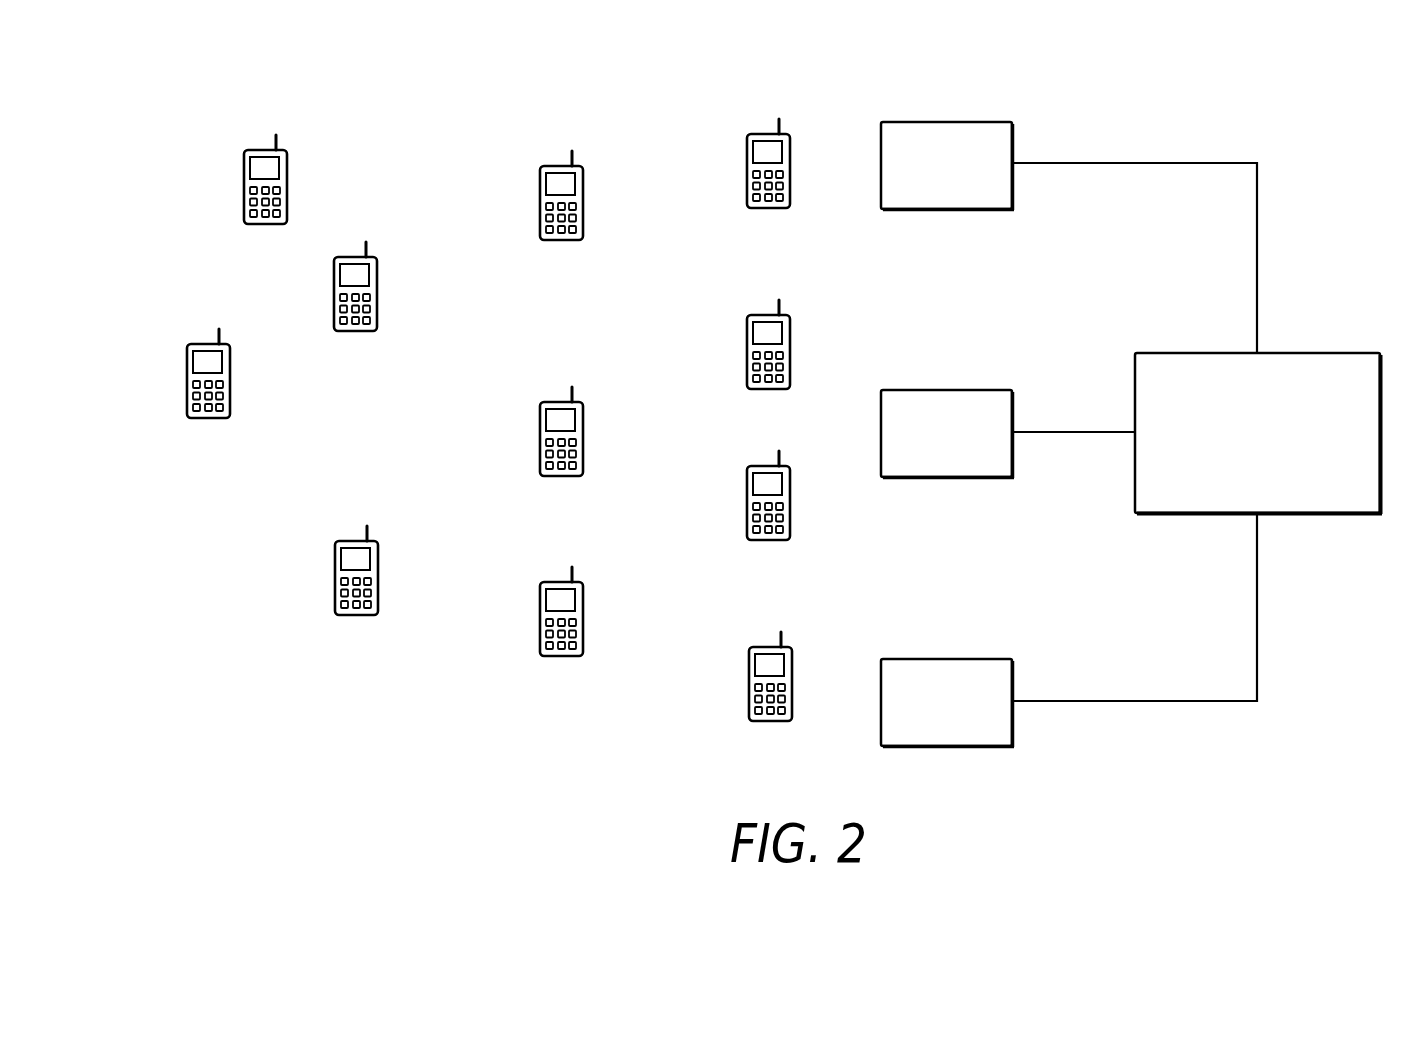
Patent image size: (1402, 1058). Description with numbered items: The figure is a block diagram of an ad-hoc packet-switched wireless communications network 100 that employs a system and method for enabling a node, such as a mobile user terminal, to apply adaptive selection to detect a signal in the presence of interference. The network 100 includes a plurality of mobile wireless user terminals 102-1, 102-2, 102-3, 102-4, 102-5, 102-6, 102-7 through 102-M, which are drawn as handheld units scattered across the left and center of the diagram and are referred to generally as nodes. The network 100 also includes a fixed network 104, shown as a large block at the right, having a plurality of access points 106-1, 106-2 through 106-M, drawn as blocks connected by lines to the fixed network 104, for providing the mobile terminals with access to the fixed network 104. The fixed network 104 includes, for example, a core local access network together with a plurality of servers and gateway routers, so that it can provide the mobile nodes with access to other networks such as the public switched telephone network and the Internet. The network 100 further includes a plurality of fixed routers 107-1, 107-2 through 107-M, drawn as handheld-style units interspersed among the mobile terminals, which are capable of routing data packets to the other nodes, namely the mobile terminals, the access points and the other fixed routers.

The ad-hoc packet-switched wireless communications network 100 is at (670, 70).
The mobile wireless user terminal 102-1 is at (187, 380).
The mobile wireless user terminal 102-2 is at (334, 291).
The mobile wireless user terminal 102-3 is at (540, 437).
The mobile wireless user terminal 102-4 is at (335, 577).
The mobile wireless user terminal 102-5 is at (747, 350).
The mobile wireless user terminal 102-6 is at (244, 185).
The mobile wireless user terminal 102-7 is at (540, 200).
The mobile wireless user terminal 102-M is at (749, 682).
The fixed router 107-1 is at (747, 170).
The fixed router 107-2 is at (540, 617).
The fixed router 107-M is at (747, 502).
The access point 106-1 is at (893, 122).
The access point 106-2 is at (893, 390).
The access point 106-M is at (893, 659).
The fixed network 104 is at (1148, 353).